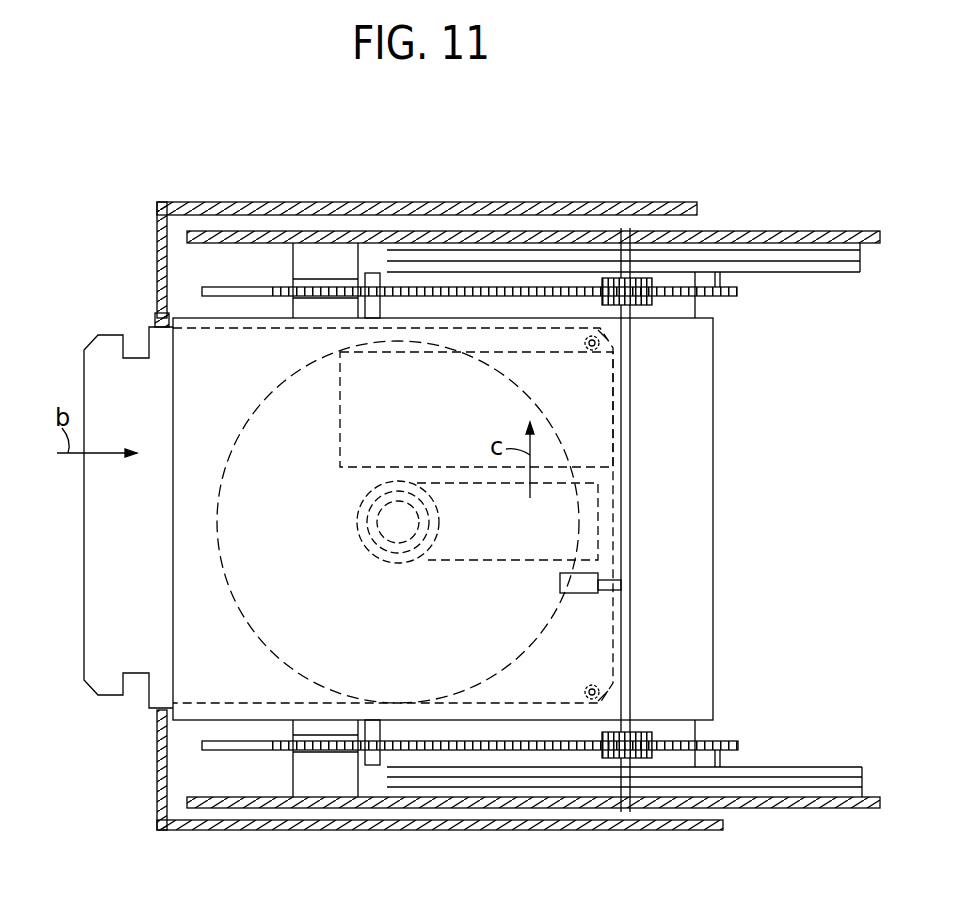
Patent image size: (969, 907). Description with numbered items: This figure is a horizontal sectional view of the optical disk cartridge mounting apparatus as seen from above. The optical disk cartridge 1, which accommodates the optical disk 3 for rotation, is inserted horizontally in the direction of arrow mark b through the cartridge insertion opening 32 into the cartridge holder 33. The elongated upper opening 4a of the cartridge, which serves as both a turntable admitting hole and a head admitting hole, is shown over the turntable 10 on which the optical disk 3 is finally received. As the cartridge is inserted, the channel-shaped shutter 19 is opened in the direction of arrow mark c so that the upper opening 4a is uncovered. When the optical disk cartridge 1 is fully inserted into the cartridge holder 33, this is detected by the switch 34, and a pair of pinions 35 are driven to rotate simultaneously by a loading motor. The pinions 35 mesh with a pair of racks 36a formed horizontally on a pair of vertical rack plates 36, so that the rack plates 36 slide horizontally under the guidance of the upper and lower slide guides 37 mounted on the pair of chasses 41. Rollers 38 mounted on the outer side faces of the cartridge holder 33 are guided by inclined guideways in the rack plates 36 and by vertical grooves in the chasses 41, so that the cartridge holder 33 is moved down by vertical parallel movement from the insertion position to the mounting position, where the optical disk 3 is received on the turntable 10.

The optical disk cartridge 1 is at (100, 518).
The optical disk 3 is at (237, 438).
The upper opening 4a is at (465, 565).
The turntable 10 is at (362, 537).
The shutter 19 is at (345, 428).
The cartridge insertion opening 32 is at (160, 318).
The cartridge holder 33 is at (705, 495).
The switch 34 is at (578, 595).
The pinions 35 is at (640, 305).
The rack plates 36 is at (483, 288).
The racks 36a is at (660, 290).
The slide guides 37 is at (305, 253).
The rollers 38 is at (370, 272).
The chasses 41 is at (255, 235).